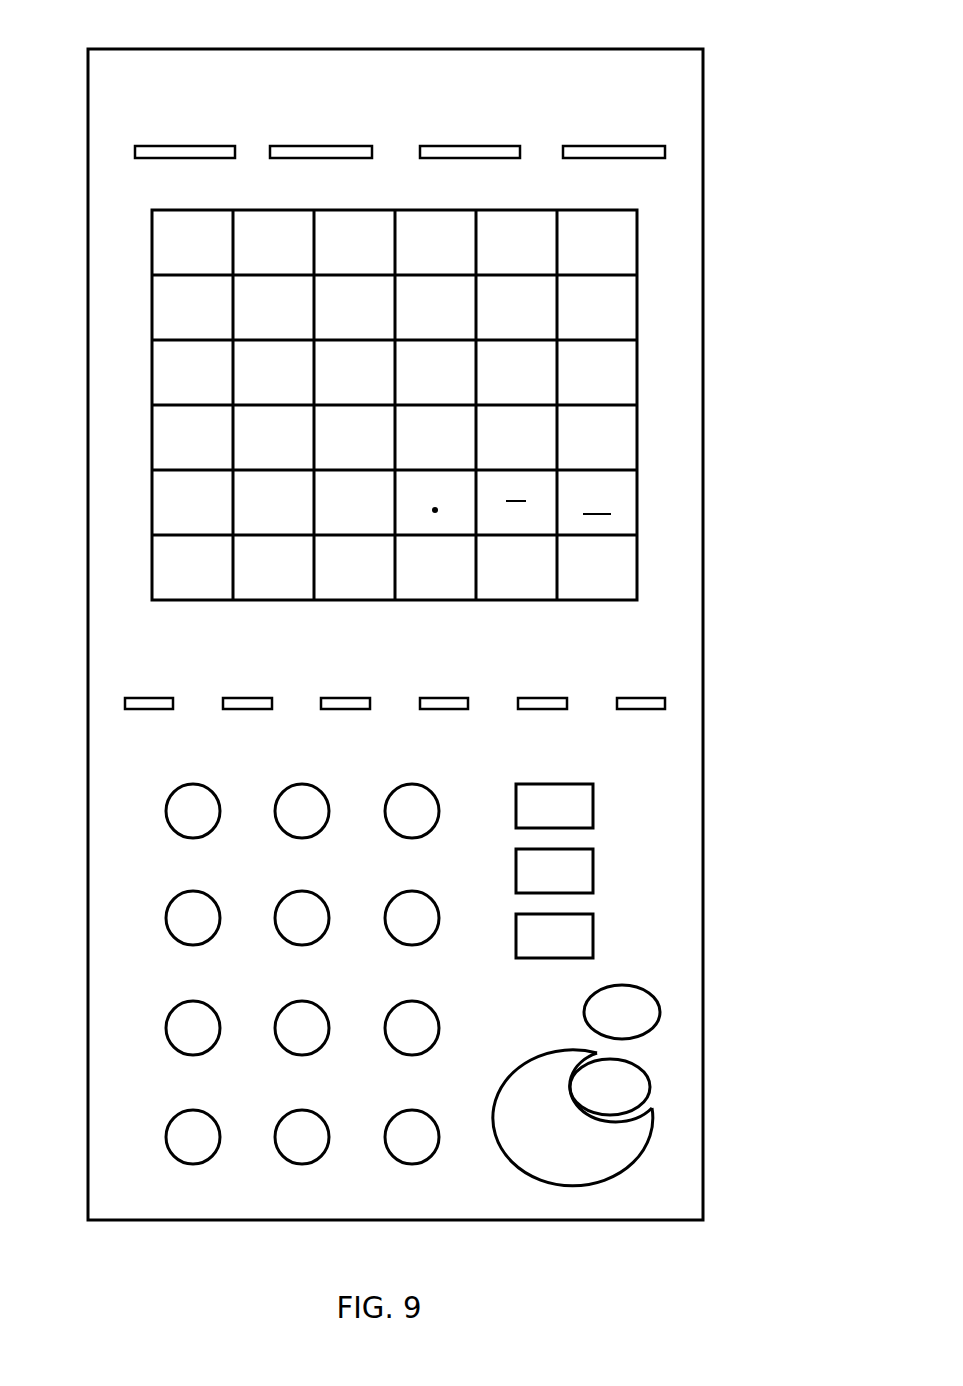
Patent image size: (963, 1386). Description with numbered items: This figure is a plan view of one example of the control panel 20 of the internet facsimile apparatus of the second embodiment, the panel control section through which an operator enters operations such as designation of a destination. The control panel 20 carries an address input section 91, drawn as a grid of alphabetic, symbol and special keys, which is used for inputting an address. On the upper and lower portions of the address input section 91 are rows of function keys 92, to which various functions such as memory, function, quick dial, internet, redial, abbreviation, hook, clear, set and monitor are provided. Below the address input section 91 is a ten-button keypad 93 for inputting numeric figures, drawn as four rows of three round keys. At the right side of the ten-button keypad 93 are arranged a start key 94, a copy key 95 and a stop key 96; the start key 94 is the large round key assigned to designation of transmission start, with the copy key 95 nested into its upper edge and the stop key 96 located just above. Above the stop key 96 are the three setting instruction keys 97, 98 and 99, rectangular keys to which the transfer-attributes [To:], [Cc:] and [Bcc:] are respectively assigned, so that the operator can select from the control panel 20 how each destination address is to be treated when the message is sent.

The control panel 20 is at (31, 24).
The address input section 91 is at (130, 200).
The function keys 92 is at (135, 106).
The 10-button keypad 93 is at (140, 775).
The start key 94 is at (642, 1154).
The copy key 95 is at (650, 1090).
The stop key 96 is at (660, 1012).
The setting instruction key 97 is at (594, 803).
The setting instruction key 98 is at (594, 868).
The setting instruction key 99 is at (594, 933).